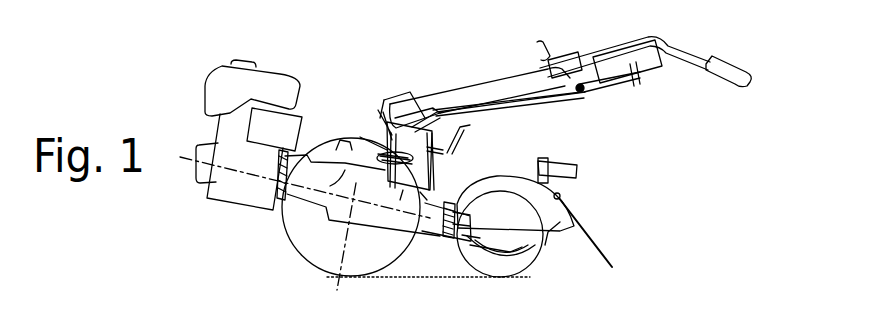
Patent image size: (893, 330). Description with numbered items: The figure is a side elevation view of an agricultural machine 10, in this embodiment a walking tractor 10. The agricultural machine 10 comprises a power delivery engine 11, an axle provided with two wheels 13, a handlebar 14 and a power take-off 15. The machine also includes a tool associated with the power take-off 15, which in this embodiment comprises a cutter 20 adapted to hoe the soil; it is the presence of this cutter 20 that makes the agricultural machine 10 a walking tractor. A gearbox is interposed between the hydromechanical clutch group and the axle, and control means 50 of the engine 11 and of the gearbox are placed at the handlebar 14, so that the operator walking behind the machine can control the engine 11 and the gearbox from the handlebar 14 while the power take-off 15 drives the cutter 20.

The agricultural machine 10 is at (303, 68).
The power delivery engine 11 is at (230, 188).
The wheels 13 is at (308, 240).
The handlebar 14 is at (723, 60).
The power take-off 15 is at (447, 237).
The cutter 20 is at (518, 198).
The control means 50 is at (632, 90).